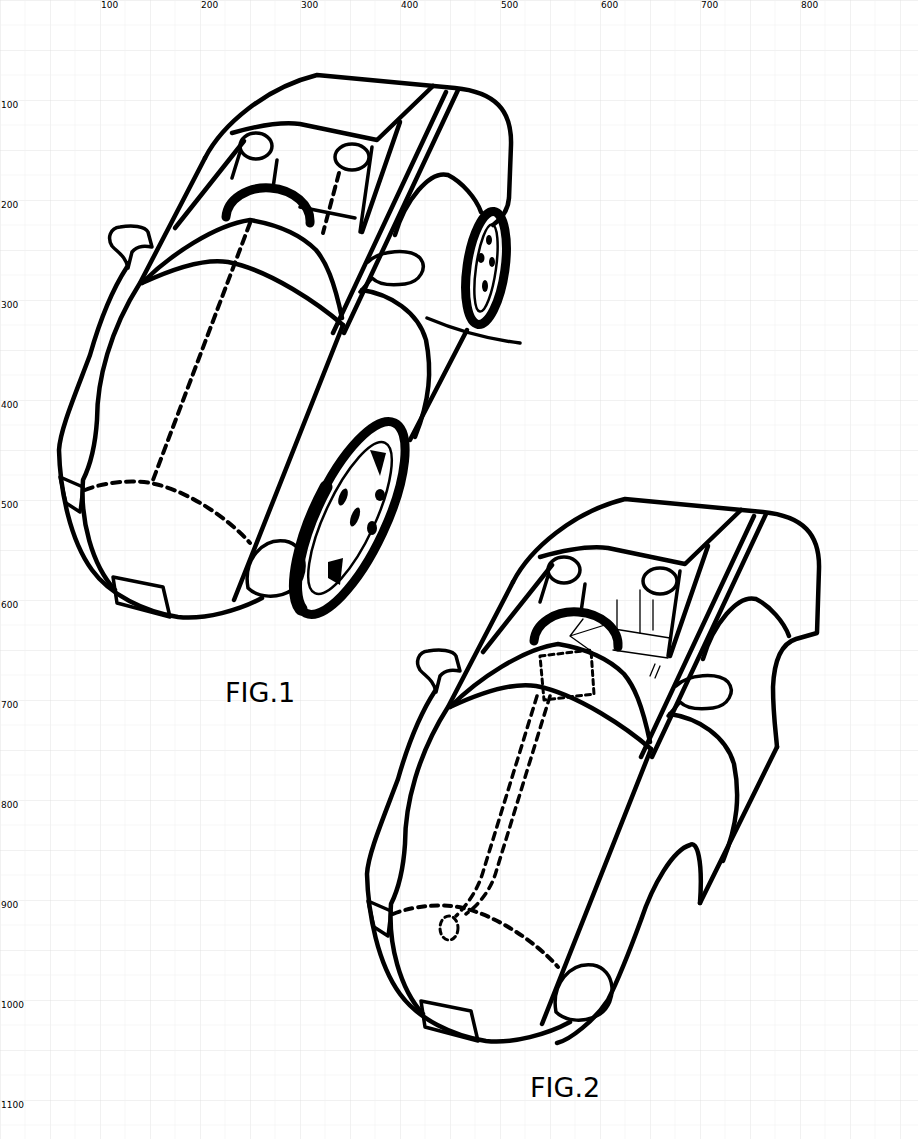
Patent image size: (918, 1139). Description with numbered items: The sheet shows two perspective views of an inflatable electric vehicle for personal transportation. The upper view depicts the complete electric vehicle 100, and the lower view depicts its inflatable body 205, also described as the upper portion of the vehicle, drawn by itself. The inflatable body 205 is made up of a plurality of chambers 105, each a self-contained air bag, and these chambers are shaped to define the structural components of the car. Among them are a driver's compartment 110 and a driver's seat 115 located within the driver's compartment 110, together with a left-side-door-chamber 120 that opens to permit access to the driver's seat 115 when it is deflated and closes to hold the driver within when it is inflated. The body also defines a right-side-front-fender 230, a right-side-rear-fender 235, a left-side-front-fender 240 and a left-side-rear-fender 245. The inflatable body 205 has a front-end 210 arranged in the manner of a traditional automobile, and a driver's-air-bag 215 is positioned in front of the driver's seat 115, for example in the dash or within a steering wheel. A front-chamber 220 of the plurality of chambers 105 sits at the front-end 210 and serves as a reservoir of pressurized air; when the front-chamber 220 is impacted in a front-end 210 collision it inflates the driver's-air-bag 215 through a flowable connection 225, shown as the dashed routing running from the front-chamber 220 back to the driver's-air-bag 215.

In FIG. 1, the electric vehicle 100 is at (156, 131).
In FIG. 1, the plurality of chambers 105 is at (129, 518).
In FIG. 1, the driver's compartment 110 is at (394, 236).
In FIG. 1, the driver's seat 115 is at (318, 172).
In FIG. 1, the left-side-door-chamber 120 is at (430, 320).
In FIG. 2, the inflatable body 205 is at (593, 697).
In FIG. 2, the front-end 210 is at (455, 899).
In FIG. 2, the driver's-air-bag 215 is at (515, 629).
In FIG. 2, the front-chamber 220 is at (353, 944).
In FIG. 2, the flowable connection 225 is at (567, 841).
In FIG. 2, the right-side-front-fender 230 is at (324, 771).
In FIG. 2, the right-side-rear-fender 235 is at (535, 561).
In FIG. 2, the left-side-front-fender 240 is at (679, 895).
In FIG. 2, the left-side-rear-fender 245 is at (829, 604).